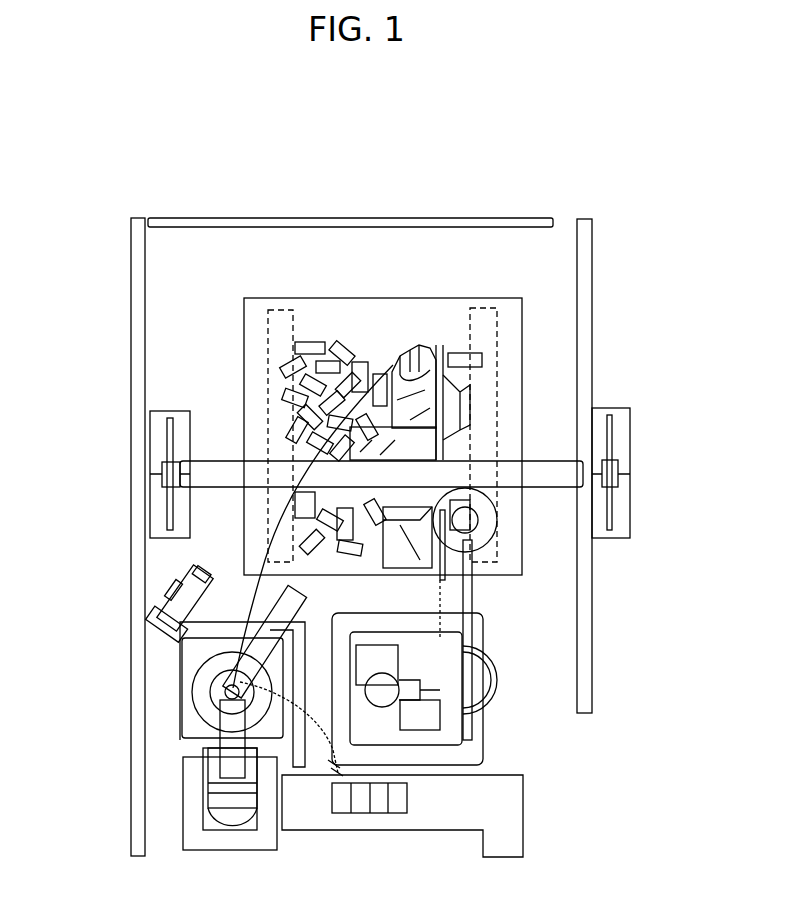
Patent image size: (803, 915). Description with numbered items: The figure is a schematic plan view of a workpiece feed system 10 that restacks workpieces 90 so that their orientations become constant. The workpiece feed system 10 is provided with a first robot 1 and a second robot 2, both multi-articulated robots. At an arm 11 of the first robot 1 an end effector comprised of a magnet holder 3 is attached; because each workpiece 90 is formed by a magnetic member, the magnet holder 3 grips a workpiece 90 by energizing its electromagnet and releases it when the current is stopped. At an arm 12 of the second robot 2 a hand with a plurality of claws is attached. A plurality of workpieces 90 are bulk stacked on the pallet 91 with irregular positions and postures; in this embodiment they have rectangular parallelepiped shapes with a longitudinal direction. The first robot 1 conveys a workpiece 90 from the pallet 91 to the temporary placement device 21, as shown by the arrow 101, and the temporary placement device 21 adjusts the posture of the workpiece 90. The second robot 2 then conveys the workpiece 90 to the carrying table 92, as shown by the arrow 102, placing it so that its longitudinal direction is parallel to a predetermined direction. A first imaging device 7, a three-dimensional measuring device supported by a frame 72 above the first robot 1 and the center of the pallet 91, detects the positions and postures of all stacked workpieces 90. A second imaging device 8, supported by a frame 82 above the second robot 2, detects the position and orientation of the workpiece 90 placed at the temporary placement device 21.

The first robot 1 is at (412, 545).
The second robot 2 is at (207, 783).
The magnet holder 3 is at (396, 352).
The first imaging device 7 is at (428, 424).
The second imaging device 8 is at (100, 667).
The workpiece feed system 10 is at (538, 190).
The arm 11 is at (442, 383).
The arm 12 is at (183, 722).
The temporary placement device 21 is at (183, 693).
The frame 72 is at (536, 476).
The frame 82 is at (160, 617).
The workpiece 90 is at (312, 345).
The pallet 91 is at (523, 320).
The carrying table 92 is at (510, 822).
The arrow 101 is at (232, 553).
The arrow 102 is at (318, 735).